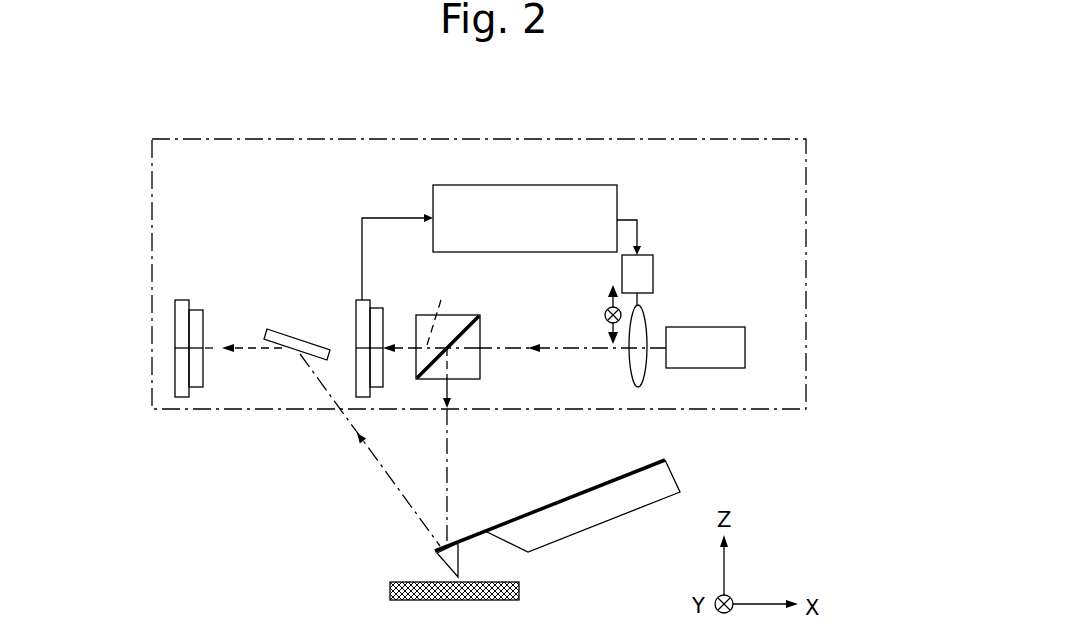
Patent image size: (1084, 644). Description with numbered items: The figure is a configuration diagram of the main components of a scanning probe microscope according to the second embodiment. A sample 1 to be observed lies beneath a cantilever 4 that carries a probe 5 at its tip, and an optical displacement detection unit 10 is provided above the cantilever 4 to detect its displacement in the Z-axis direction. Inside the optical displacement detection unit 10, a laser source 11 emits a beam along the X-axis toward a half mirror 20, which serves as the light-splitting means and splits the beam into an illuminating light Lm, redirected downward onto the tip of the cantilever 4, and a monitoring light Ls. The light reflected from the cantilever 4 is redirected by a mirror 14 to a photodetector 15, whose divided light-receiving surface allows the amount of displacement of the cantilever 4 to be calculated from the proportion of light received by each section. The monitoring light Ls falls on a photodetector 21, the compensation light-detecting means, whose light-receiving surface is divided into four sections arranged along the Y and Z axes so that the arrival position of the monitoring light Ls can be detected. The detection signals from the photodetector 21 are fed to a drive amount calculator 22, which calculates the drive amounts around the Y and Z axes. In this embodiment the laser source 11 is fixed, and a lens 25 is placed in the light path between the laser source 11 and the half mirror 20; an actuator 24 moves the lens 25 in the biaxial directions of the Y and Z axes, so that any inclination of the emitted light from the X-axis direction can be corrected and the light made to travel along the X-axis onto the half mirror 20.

The sample 1 is at (390, 588).
The cantilever 4 is at (477, 533).
The probe 5 is at (437, 563).
The optical displacement detection unit 10 is at (806, 227).
The laser source 11 is at (745, 335).
The mirror 14 is at (280, 332).
The photodetector 15 is at (205, 317).
The half mirror 20 is at (482, 327).
The photodetector 21 is at (375, 303).
The drive amount calculator 22 is at (502, 183).
The actuator 24 is at (653, 268).
The lens 25 is at (645, 320).
The monitoring light Ls is at (439, 309).
The illuminating light Lm is at (448, 445).